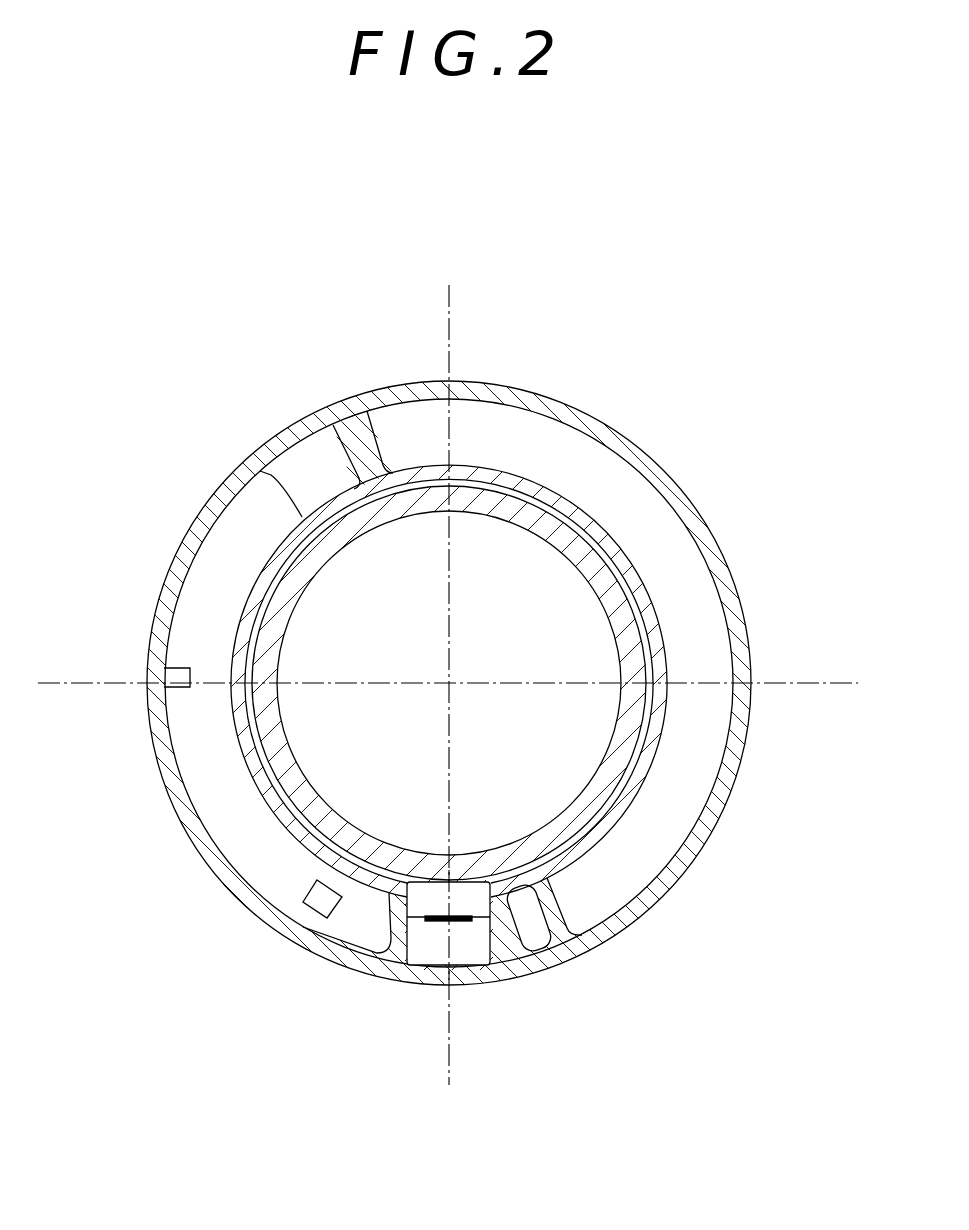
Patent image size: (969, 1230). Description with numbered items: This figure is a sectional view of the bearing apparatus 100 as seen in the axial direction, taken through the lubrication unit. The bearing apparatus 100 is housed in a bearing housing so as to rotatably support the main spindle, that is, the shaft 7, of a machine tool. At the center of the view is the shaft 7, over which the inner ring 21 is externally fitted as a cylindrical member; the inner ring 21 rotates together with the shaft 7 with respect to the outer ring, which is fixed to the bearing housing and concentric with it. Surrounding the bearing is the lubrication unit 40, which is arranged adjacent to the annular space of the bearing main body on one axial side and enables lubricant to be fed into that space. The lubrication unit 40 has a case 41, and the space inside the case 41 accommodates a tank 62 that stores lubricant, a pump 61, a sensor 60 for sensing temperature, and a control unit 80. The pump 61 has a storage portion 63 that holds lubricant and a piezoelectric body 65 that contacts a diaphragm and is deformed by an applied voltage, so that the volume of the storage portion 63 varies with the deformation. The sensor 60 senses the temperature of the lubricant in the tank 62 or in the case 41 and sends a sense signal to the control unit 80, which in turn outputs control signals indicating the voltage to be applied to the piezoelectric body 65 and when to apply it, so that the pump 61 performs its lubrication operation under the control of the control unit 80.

The bearing apparatus 100 is at (635, 283).
The lubrication unit 40 is at (534, 379).
The case 41 is at (699, 836).
The tank 62 is at (684, 576).
The shaft 7 is at (588, 853).
The inner ring 21 is at (300, 780).
The sensor 60 is at (161, 688).
The control unit 80 is at (309, 915).
The storage portion 63 is at (420, 907).
The pump 61 is at (473, 945).
The piezoelectric body 65 is at (456, 924).